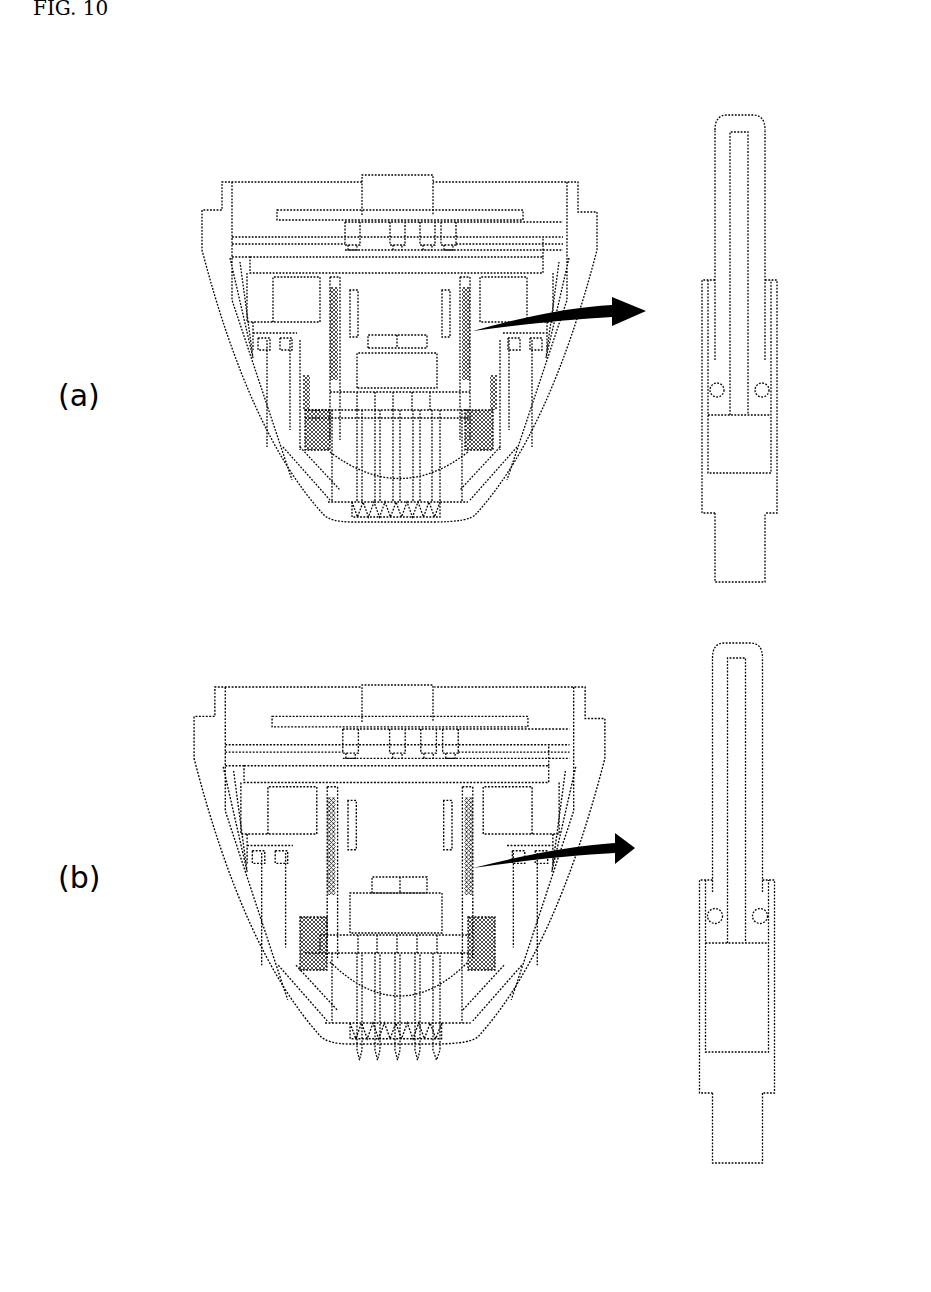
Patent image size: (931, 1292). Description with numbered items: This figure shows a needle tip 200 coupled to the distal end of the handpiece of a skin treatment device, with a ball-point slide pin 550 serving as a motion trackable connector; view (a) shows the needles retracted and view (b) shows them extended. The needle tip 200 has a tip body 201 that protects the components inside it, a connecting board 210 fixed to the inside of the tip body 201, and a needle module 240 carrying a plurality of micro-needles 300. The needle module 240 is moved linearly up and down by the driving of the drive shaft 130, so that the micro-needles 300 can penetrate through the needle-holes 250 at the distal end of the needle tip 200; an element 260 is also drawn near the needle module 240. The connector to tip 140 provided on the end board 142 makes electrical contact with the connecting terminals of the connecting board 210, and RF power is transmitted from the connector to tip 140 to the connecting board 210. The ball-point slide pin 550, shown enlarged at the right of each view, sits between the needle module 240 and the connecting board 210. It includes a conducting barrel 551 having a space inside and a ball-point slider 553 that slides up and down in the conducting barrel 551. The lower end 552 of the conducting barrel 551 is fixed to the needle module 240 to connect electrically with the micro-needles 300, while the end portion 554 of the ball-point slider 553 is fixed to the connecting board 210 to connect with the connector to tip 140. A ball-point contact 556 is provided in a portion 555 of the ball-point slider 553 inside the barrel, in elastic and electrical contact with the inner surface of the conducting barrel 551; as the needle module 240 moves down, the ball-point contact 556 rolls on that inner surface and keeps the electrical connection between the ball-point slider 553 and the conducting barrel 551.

The drive shaft 130 is at (366, 191).
The connector to tip 140 is at (343, 231).
The end board 142 is at (272, 214).
The needle tip 200 is at (545, 418).
The tip body 201 is at (517, 445).
The connecting board 210 is at (258, 262).
The needle module 240 is at (332, 403).
The needle-holes 250 is at (433, 521).
The seal member 260 is at (303, 430).
The micro-needles 300 is at (332, 478).
The ball-point slide pin 550 is at (316, 312).
The conducting barrel 551 is at (777, 327).
The lower end 552 is at (758, 545).
The ball-point slider 553 is at (760, 226).
The end portion 554 is at (741, 114).
The portion in the conducting barrel 555 is at (721, 376).
The ball-point contact 556 is at (764, 388).